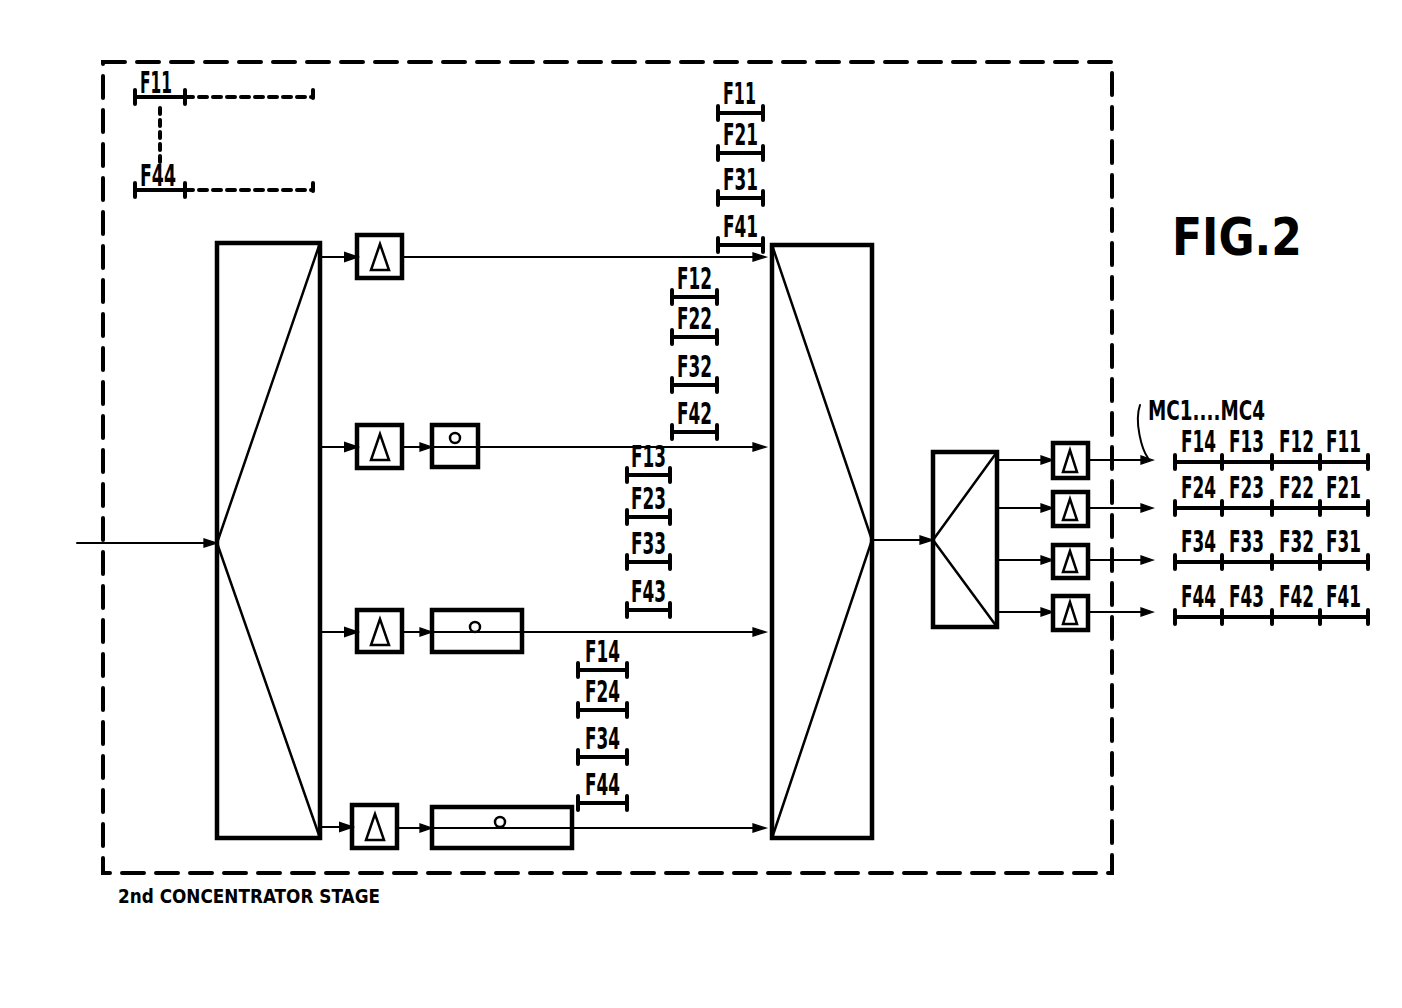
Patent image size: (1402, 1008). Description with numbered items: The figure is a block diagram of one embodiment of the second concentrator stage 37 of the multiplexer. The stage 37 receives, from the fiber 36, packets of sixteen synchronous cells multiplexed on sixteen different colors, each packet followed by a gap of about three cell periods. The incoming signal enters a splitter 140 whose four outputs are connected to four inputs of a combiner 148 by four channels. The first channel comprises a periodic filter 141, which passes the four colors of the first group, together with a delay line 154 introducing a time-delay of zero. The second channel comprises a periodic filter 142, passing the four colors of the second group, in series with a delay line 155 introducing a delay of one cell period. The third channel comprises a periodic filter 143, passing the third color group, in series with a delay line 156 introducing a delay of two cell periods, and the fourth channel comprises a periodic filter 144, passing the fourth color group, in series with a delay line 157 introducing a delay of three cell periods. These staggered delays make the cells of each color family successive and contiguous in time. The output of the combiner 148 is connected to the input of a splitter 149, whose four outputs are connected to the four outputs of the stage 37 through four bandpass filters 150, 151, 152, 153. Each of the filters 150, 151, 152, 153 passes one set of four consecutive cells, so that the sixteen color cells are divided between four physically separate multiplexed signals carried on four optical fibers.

The fiber 36 is at (80, 542).
The stage 37 is at (1113, 147).
The splitter 140 is at (228, 290).
The periodic filter 141 is at (367, 236).
The periodic filter 142 is at (367, 426).
The periodic filter 143 is at (367, 611).
The periodic filter 144 is at (362, 806).
The combiner 148 is at (868, 255).
The splitter 149 is at (955, 455).
The bandpass filter 150 is at (1070, 443).
The bandpass filter 151 is at (1053, 497).
The bandpass filter 152 is at (1053, 550).
The bandpass filter 153 is at (1053, 603).
The delay line 154 is at (478, 258).
The delay line 155 is at (478, 432).
The delay line 156 is at (522, 618).
The delay line 157 is at (572, 848).